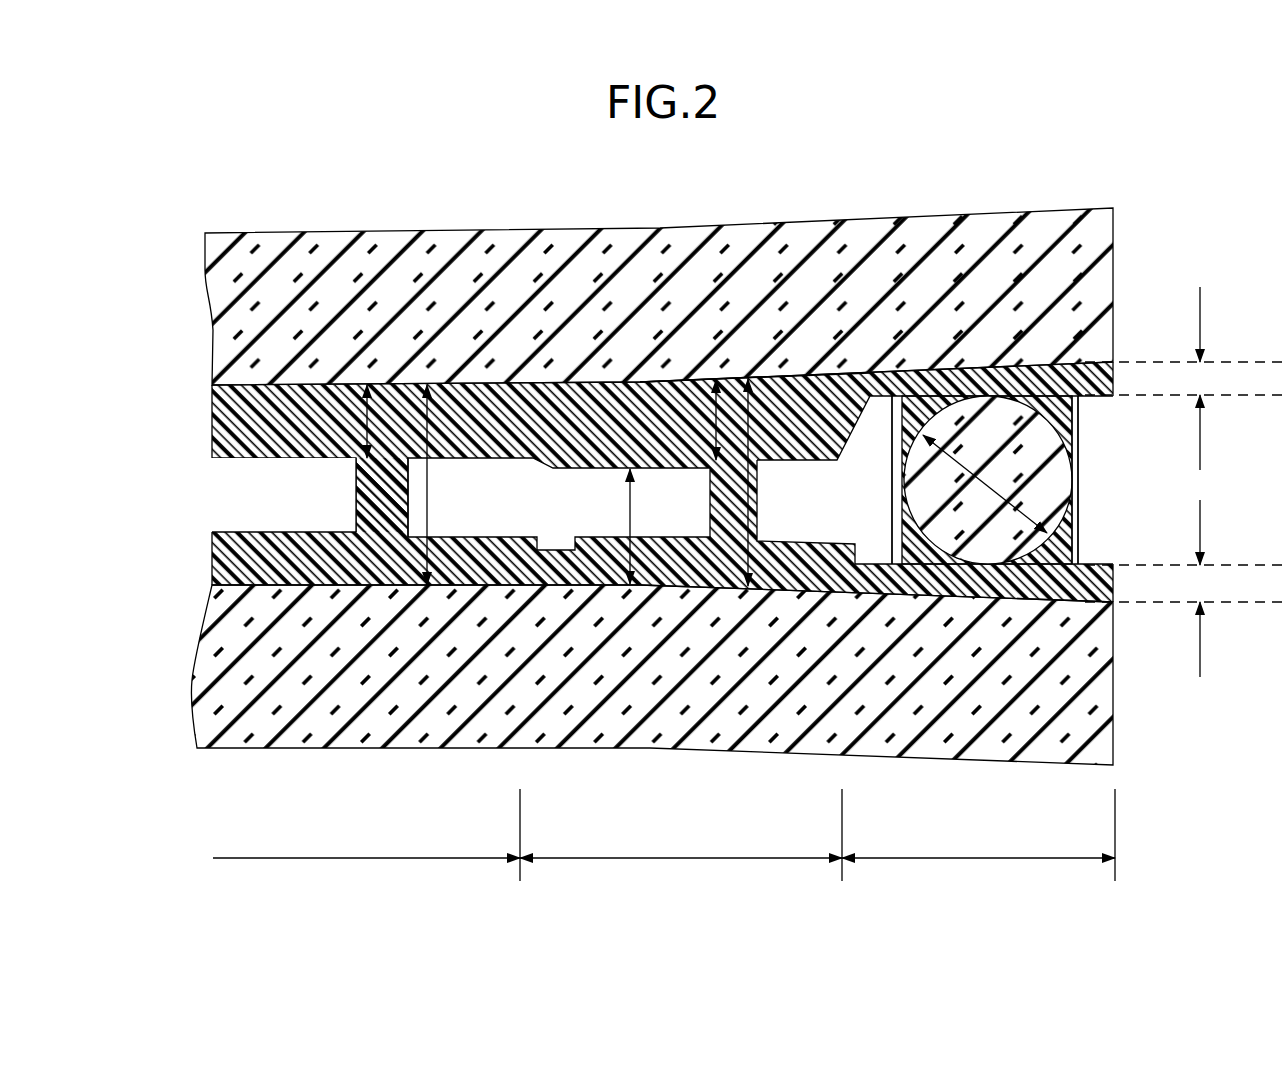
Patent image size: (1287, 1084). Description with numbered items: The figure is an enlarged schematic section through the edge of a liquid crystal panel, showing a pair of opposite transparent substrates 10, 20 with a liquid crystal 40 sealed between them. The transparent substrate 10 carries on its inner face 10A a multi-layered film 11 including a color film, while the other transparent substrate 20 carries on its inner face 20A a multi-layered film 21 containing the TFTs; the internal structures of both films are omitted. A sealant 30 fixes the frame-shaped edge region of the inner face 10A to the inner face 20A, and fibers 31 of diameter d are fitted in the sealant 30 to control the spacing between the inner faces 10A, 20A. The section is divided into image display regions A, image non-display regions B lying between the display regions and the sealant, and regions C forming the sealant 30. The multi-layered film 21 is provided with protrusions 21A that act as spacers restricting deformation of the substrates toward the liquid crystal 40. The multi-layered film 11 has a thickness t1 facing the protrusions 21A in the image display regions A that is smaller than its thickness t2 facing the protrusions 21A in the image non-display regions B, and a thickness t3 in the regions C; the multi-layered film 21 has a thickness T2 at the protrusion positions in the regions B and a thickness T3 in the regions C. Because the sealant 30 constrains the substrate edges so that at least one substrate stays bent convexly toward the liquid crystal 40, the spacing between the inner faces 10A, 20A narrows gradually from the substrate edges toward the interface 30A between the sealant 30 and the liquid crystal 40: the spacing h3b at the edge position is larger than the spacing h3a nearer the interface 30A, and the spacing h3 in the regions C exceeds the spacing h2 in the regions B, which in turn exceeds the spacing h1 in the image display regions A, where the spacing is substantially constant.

The transparent substrate 10 is at (228, 276).
The inner face of transparent substrate 10A is at (212, 396).
The multi-layered film 11 is at (235, 420).
The transparent substrate 20 is at (208, 655).
The inner face of transparent substrate 20A is at (214, 562).
The multi-layered film 21 is at (232, 545).
The protrusion 21A is at (356, 500).
The sealant 30 is at (1053, 395).
The interface 30A is at (810, 384).
The fiber 31 is at (957, 427).
The liquid crystal 40 is at (232, 503).
The film thickness t1 is at (360, 421).
The film thickness t2 is at (712, 460).
The film thickness t3 is at (1186, 378).
The film thickness T2 is at (584, 526).
The film thickness T3 is at (1186, 588).
The spacing h1 is at (444, 485).
The spacing h2 is at (760, 483).
The spacing h3 is at (990, 448).
The spacing h3a is at (868, 480).
The spacing h3b is at (1080, 498).
The fiber diameter d is at (985, 484).
The image display region A is at (366, 835).
The image non-display region B is at (681, 835).
The region forming the sealant C is at (978, 835).